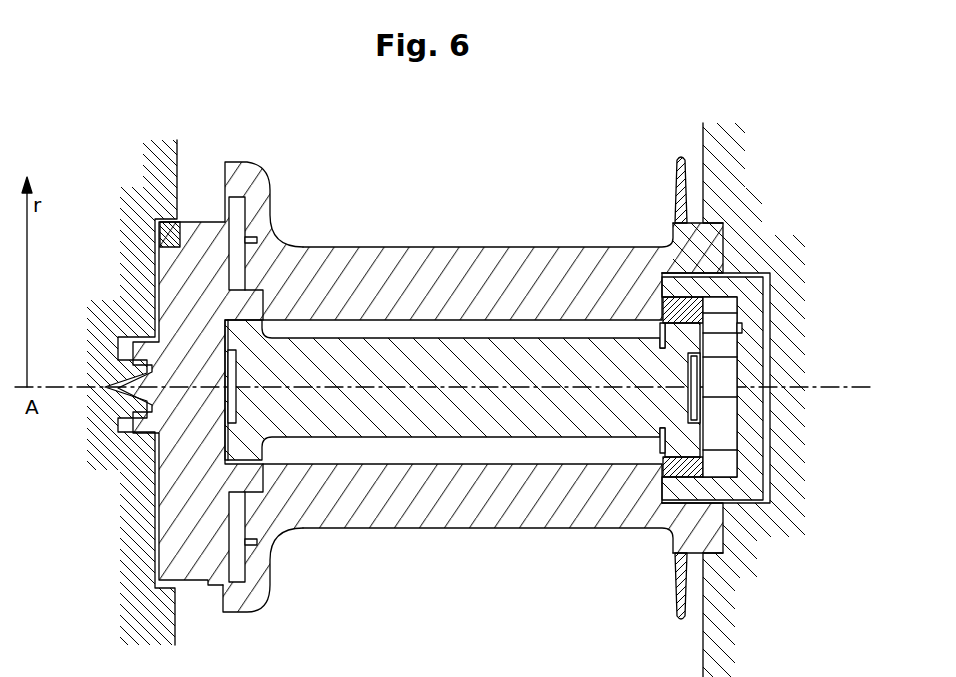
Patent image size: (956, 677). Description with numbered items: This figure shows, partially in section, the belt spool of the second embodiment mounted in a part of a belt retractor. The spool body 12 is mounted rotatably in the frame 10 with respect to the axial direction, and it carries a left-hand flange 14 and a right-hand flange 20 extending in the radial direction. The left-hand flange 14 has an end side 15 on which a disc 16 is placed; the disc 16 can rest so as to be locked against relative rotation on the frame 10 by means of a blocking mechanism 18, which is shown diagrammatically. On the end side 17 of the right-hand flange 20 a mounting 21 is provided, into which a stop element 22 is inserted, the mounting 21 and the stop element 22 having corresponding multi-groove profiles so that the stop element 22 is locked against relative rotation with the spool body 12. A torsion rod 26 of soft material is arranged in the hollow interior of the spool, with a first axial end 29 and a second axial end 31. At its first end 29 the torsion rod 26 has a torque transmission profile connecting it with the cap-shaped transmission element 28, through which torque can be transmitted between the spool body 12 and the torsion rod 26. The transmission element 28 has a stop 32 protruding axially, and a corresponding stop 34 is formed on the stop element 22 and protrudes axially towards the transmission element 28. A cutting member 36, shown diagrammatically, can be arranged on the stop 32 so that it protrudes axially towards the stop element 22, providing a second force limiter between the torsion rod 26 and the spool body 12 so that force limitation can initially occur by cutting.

The frame 10 is at (153, 165).
The spool body 12 is at (385, 516).
The left-hand flange 14 is at (243, 602).
The end side 15 is at (240, 501).
The disc 16 is at (187, 565).
The end side 17 is at (710, 270).
The blocking mechanism 18 is at (162, 237).
The right-hand flange 20 is at (675, 593).
The mounting 21 is at (773, 505).
The stop element 22 is at (757, 470).
The torsion rod 26 is at (461, 428).
The transmission element 28 is at (680, 297).
The first axial end 29 is at (688, 449).
The second axial end 31 is at (252, 344).
The stop 32 is at (725, 348).
The stop 34 is at (727, 420).
The cutting member 36 is at (742, 326).